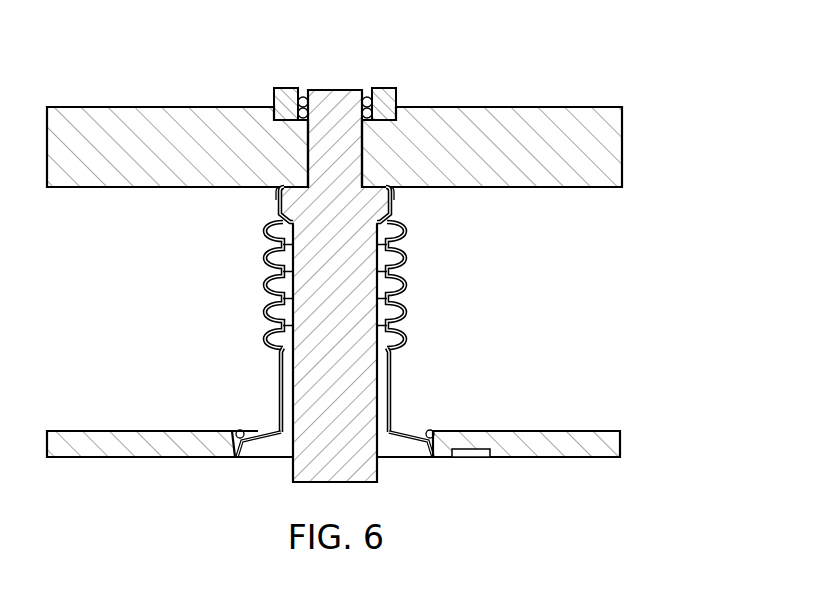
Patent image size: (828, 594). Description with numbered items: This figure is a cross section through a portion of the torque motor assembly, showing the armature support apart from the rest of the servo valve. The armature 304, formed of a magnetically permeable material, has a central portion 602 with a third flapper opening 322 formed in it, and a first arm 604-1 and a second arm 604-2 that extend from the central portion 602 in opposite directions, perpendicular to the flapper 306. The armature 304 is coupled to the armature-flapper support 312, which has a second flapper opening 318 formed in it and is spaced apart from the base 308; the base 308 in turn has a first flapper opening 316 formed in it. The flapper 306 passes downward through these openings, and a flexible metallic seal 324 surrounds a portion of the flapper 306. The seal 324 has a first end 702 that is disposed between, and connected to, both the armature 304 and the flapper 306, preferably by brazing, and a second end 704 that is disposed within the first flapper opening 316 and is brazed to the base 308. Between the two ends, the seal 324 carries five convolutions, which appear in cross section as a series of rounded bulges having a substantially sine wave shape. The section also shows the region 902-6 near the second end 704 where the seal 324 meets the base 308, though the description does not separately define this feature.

The armature 304 is at (364, 126).
The first arm 604-1 is at (145, 113).
The second arm 604-2 is at (544, 113).
The armature-flapper support 312 is at (382, 89).
The second flapper opening 318 is at (366, 96).
The third flapper opening 322 is at (358, 144).
The first end 702 is at (290, 187).
The central portion 602 is at (250, 188).
The seal 324 is at (264, 285).
The flapper 306 is at (381, 375).
The second end 704 is at (258, 431).
The right foot flange 902-6 is at (430, 432).
The base 308 is at (333, 446).
The first flapper opening 316 is at (433, 458).